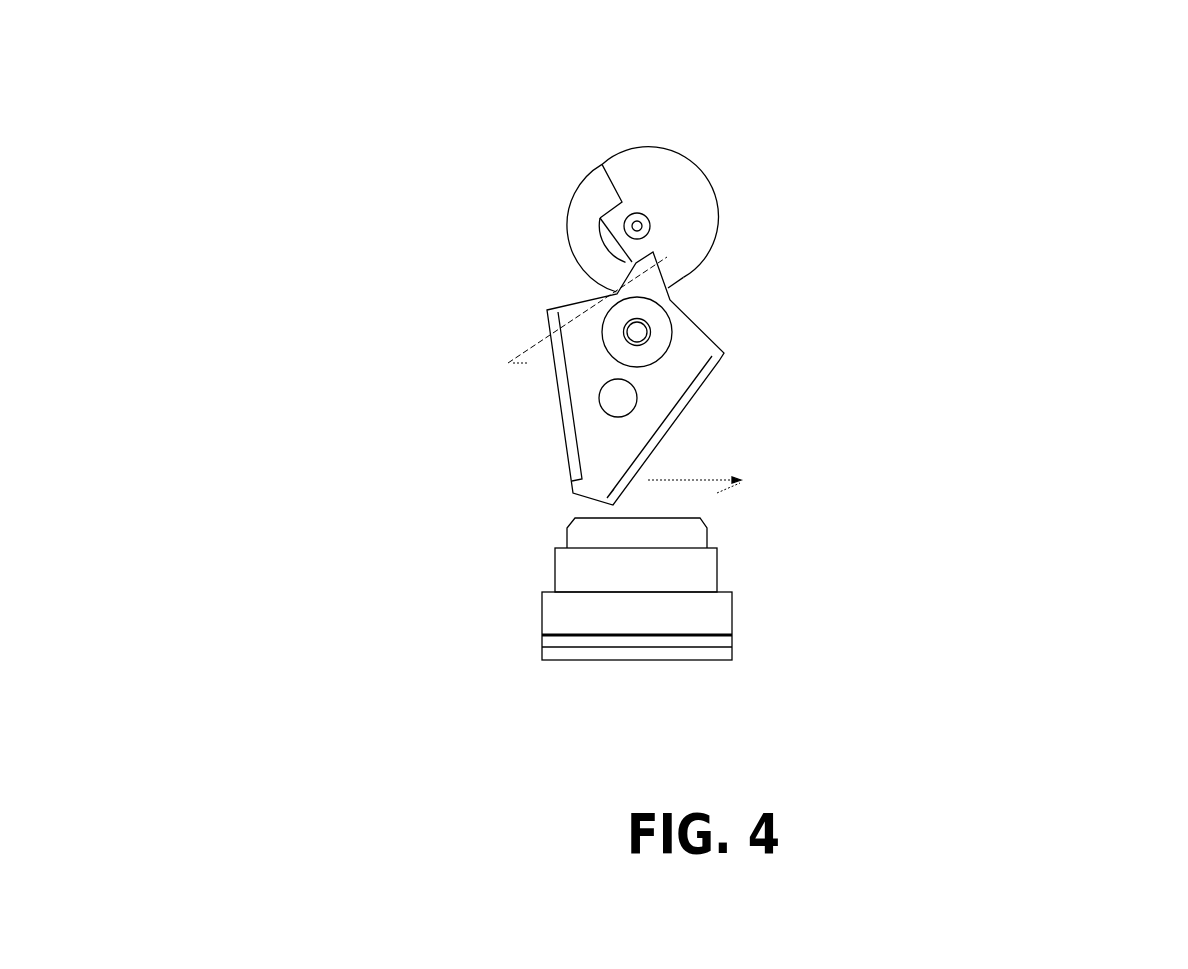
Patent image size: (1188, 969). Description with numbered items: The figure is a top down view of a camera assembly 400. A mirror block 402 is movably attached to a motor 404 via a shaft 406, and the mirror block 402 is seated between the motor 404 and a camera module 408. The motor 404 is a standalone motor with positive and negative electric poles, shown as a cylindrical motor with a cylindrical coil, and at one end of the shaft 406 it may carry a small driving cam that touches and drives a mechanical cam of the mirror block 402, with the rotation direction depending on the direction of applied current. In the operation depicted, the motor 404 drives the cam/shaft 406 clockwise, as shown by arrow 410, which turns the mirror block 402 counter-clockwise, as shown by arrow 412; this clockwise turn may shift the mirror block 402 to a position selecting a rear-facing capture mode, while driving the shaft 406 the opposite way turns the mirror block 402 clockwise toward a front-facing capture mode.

The camera assembly 400 is at (198, 66).
The mirror block 402 is at (561, 301).
The motor 404 is at (702, 170).
The shaft 406 is at (658, 340).
The camera module 408 is at (740, 592).
The arrow 410 is at (507, 356).
The arrow 412 is at (718, 493).